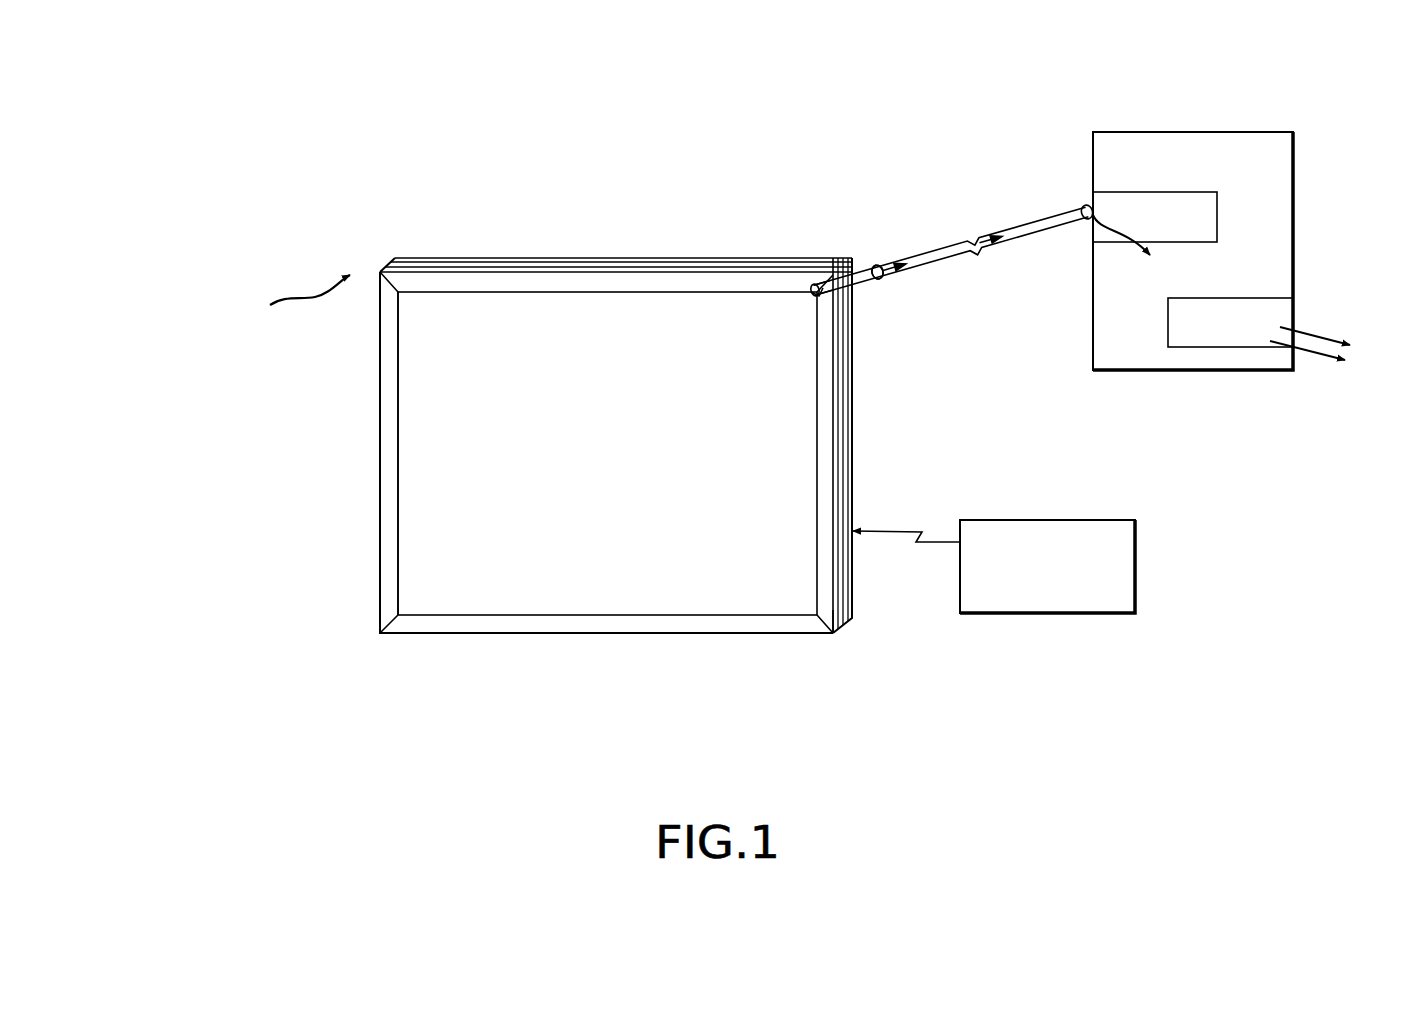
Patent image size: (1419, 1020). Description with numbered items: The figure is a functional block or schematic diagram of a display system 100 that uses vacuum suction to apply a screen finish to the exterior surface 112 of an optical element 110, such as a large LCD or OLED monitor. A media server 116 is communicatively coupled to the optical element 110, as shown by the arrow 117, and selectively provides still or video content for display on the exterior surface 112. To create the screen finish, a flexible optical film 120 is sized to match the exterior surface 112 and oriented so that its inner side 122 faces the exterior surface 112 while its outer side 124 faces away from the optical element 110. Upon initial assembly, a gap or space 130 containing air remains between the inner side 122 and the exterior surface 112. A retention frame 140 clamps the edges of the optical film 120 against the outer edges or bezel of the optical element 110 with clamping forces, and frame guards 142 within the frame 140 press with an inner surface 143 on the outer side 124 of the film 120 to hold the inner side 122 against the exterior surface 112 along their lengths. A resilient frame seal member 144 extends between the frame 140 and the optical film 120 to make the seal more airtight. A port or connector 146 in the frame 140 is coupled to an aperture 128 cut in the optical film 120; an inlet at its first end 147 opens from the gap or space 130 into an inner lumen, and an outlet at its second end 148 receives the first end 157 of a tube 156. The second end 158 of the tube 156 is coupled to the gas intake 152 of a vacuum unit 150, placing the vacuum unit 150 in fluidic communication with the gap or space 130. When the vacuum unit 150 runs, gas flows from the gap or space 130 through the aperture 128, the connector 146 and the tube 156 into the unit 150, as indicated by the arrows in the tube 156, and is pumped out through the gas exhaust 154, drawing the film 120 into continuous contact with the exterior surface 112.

The display system 100 is at (355, 143).
The optical element 110 is at (742, 258).
The exterior surface 112 is at (588, 270).
The media server 116 is at (1129, 604).
The communicative coupling 117 is at (912, 548).
The optical film 120 is at (845, 602).
The inner side 122 is at (838, 616).
The outer side 124 is at (683, 593).
The aperture 128 is at (812, 288).
The gap or space 130 is at (847, 258).
The retention frame 140 is at (378, 418).
The frame guards 142 is at (415, 628).
The inner surface 143 is at (458, 268).
The frame seal member 144 is at (390, 262).
The port or connector 146 is at (868, 290).
The first end 147 is at (815, 297).
The second end 148 is at (881, 278).
The vacuum unit 150 is at (1139, 347).
The gas intake 152 is at (1106, 242).
The gas exhaust 154 is at (1268, 298).
The tube 156 is at (970, 259).
The first end of tube 157 is at (907, 252).
The second end of tube 158 is at (1085, 205).